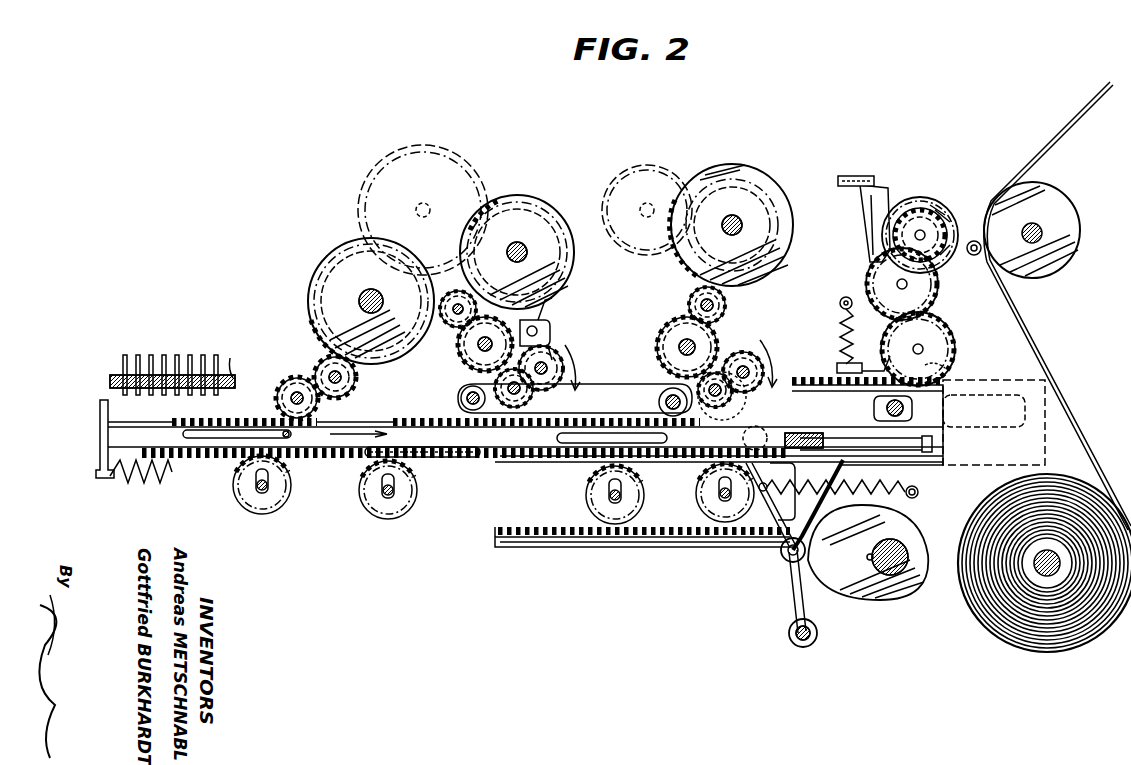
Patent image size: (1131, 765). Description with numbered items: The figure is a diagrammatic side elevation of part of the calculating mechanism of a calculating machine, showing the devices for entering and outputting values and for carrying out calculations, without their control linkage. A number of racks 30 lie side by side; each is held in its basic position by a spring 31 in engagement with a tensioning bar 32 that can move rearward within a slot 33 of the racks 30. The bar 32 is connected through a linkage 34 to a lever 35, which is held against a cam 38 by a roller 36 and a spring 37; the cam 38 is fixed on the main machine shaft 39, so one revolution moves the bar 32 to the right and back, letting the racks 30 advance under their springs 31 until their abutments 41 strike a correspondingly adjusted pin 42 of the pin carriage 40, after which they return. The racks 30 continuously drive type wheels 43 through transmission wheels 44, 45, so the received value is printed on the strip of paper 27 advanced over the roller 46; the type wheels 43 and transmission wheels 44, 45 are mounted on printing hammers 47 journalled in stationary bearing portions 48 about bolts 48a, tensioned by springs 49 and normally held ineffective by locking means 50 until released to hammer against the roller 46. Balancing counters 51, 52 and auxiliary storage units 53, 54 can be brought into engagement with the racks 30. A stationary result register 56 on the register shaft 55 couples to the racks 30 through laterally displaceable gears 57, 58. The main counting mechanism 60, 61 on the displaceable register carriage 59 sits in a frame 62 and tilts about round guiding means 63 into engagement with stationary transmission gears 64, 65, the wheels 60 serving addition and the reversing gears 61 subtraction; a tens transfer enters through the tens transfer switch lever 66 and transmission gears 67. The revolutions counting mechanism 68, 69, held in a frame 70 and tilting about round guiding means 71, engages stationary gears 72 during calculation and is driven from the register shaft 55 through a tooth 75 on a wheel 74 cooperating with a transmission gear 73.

The strip of paper 27 is at (1068, 142).
The racks 30 is at (435, 460).
The spring 31 is at (154, 486).
The tensioning bar 32 is at (886, 410).
The slot 33 is at (934, 446).
The linkage 34 is at (803, 432).
The lever 35 is at (792, 604).
The roller 36 is at (785, 560).
The spring 37 is at (912, 500).
The cam 38 is at (862, 601).
The main machine shaft 39 is at (900, 576).
The pin carriage 40 is at (237, 357).
The abutments 41 is at (100, 416).
The pin 42 is at (183, 355).
The type wheels 43 is at (934, 210).
The transmission wheel 44 is at (954, 350).
The transmission wheel 45 is at (880, 294).
The roller 46 is at (1080, 218).
The printing hammers 47 is at (897, 202).
The bearing portions 48 is at (953, 414).
The bolts 48a is at (958, 368).
The springs 49 is at (850, 341).
The locking means 50 is at (858, 184).
The balancing counter I 51 is at (700, 496).
The balancing counter II 52 is at (590, 496).
The auxiliary storage unit 53 is at (365, 500).
The auxiliary storage unit 54 is at (242, 498).
The register shaft 55 is at (371, 301).
The stationary result register 56 is at (323, 278).
The laterally displaceable gear 57 is at (360, 392).
The laterally displaceable gear 58 is at (292, 380).
The register carriage 59 is at (590, 392).
The wheels of main counting mechanism 60 is at (540, 395).
The reversing gears 61 is at (566, 360).
The frame 62 is at (495, 388).
The round guiding means 63 is at (461, 402).
The transmission gear 64 is at (455, 292).
The transmission gear 65 is at (458, 355).
The tens transfer switch lever 66 is at (551, 324).
The transmission gears 67 is at (527, 200).
The gears of revolutions counting mechanism 68 is at (738, 402).
The gears of revolutions counting mechanism 69 is at (744, 352).
The frame 70 is at (698, 386).
The round guiding means 71 is at (660, 406).
The machine stationary gears 72 is at (672, 333).
The transmission gear 73 is at (727, 307).
The wheel 74 is at (738, 176).
The tooth 75 is at (690, 272).